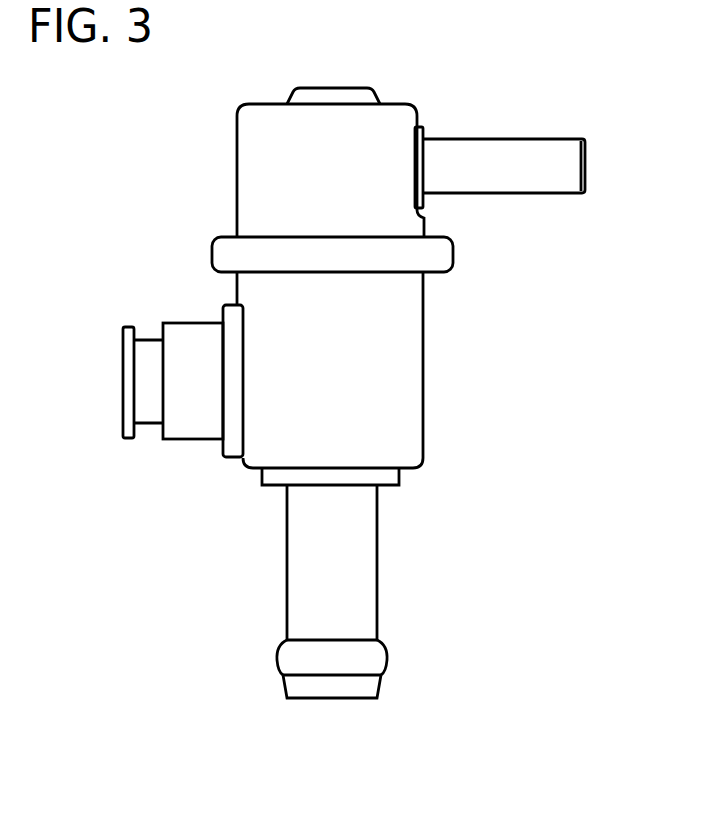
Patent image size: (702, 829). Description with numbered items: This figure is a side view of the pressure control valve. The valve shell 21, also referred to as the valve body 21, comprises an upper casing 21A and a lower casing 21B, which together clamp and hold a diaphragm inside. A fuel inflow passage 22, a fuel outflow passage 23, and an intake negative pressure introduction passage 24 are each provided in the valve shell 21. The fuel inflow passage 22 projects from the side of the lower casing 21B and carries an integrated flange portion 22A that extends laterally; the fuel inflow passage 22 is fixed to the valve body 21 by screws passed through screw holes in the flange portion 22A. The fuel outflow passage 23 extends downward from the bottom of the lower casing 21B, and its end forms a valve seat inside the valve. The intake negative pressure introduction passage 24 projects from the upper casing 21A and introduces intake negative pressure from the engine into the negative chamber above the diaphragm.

The valve shell 21 is at (425, 380).
The upper casing 21A is at (247, 187).
The lower casing 21B is at (418, 443).
The fuel inflow passage 22 is at (183, 433).
The flange portion 22A is at (235, 447).
The fuel outflow passage 23 is at (368, 560).
The intake negative pressure introduction passage 24 is at (520, 180).